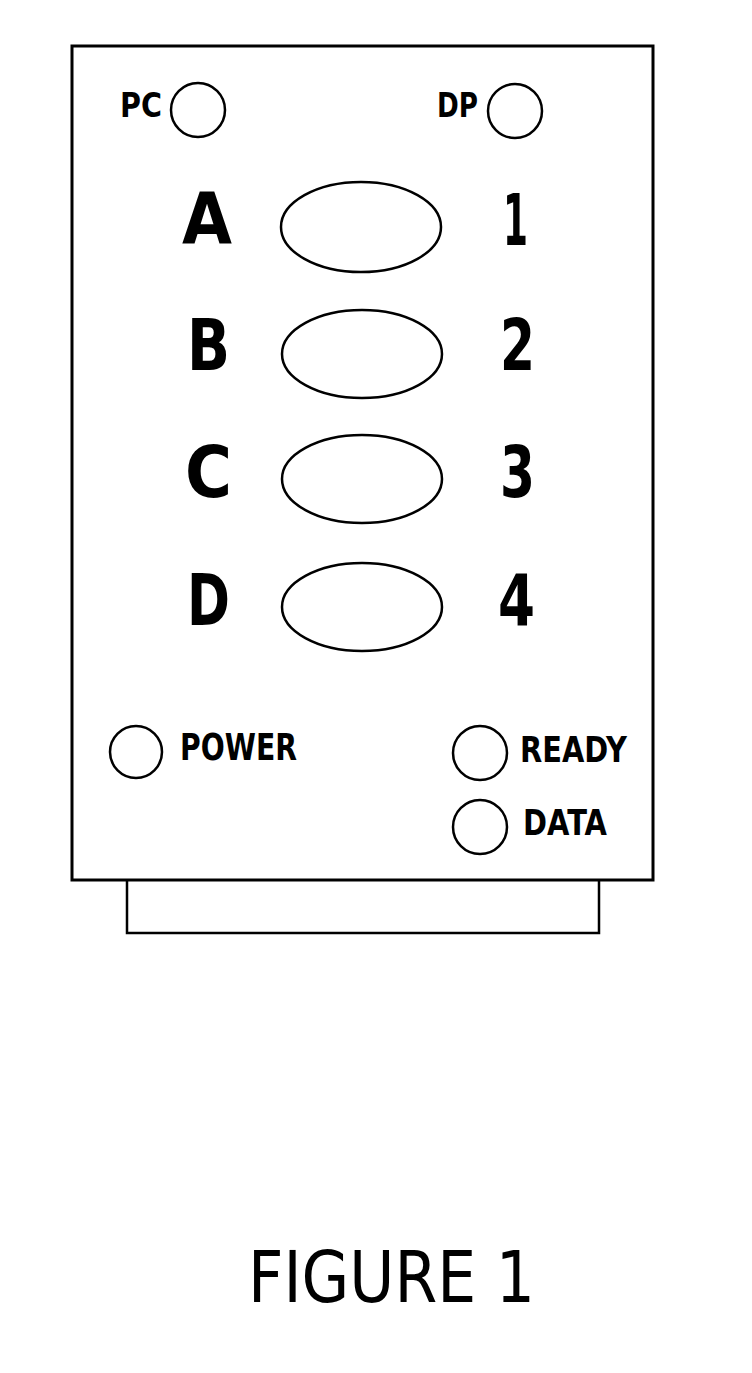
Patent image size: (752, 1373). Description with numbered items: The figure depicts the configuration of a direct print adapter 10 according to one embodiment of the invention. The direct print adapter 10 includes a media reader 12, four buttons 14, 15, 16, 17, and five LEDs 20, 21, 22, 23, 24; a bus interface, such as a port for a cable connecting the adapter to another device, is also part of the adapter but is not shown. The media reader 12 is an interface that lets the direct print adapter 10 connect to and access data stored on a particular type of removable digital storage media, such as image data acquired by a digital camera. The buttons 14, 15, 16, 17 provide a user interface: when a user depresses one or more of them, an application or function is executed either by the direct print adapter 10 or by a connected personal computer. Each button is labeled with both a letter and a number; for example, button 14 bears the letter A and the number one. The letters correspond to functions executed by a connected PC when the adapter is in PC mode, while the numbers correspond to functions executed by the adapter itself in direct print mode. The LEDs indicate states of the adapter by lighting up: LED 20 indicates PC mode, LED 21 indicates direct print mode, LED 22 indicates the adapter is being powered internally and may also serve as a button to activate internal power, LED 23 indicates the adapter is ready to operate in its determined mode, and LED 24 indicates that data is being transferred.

The direct print adapter 10 is at (120, 45).
The media reader 12 is at (599, 933).
The button 14 is at (430, 201).
The button 15 is at (430, 332).
The button 16 is at (430, 457).
The button 17 is at (430, 585).
The LED 20 is at (223, 99).
The LED 21 is at (540, 100).
The LED 22 is at (135, 726).
The LED 23 is at (455, 743).
The LED 24 is at (455, 820).